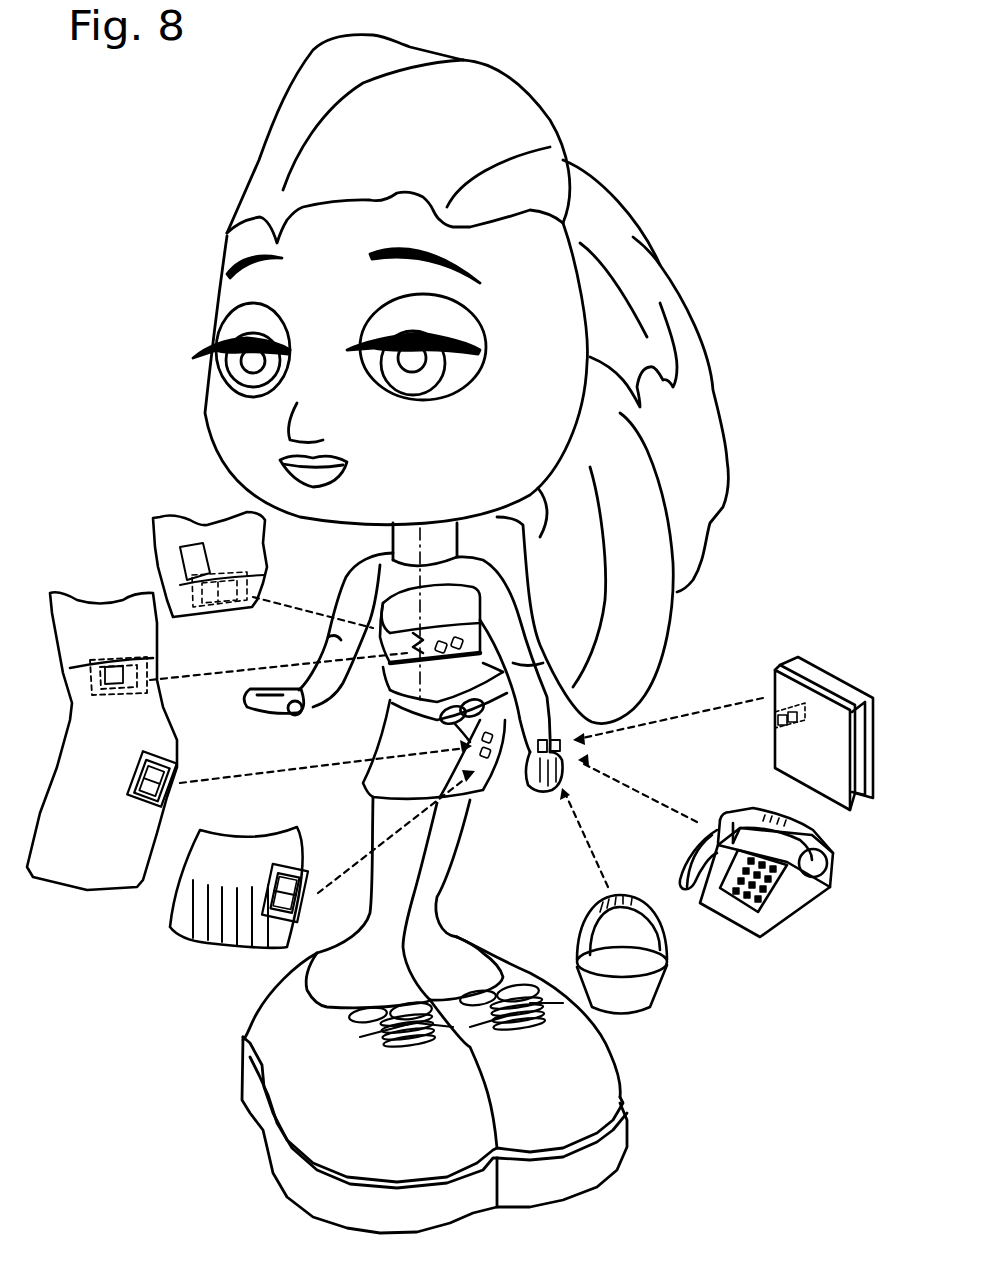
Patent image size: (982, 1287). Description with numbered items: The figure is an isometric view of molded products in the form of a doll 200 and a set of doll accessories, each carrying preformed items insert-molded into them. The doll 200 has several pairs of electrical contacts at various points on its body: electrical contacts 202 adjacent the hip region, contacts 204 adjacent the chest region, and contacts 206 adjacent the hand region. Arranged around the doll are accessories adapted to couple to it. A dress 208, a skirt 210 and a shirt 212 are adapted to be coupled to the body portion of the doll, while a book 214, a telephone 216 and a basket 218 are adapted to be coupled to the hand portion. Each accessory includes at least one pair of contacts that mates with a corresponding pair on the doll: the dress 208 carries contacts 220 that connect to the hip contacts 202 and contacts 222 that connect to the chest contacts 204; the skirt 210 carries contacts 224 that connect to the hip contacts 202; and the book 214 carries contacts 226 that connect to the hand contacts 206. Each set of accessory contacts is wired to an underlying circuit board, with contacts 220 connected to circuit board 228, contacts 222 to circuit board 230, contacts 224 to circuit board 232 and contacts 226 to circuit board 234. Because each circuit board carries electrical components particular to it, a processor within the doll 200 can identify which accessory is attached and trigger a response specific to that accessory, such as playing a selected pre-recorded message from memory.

The doll 200 is at (627, 92).
The electrical contacts 202 is at (488, 750).
The contacts 204 is at (441, 643).
The contacts 206 is at (565, 748).
The dress 208 is at (82, 880).
The skirt 210 is at (180, 925).
The shirt 212 is at (165, 523).
The book 214 is at (788, 777).
The telephone 216 is at (782, 904).
The basket 218 is at (640, 998).
The contacts 220 is at (177, 772).
The contacts 222 is at (150, 672).
The contacts 224 is at (313, 866).
The contacts 226 is at (775, 727).
The circuit board 228 is at (133, 777).
The circuit board 230 is at (93, 662).
The circuit board 232 is at (257, 890).
The circuit board 234 is at (788, 712).